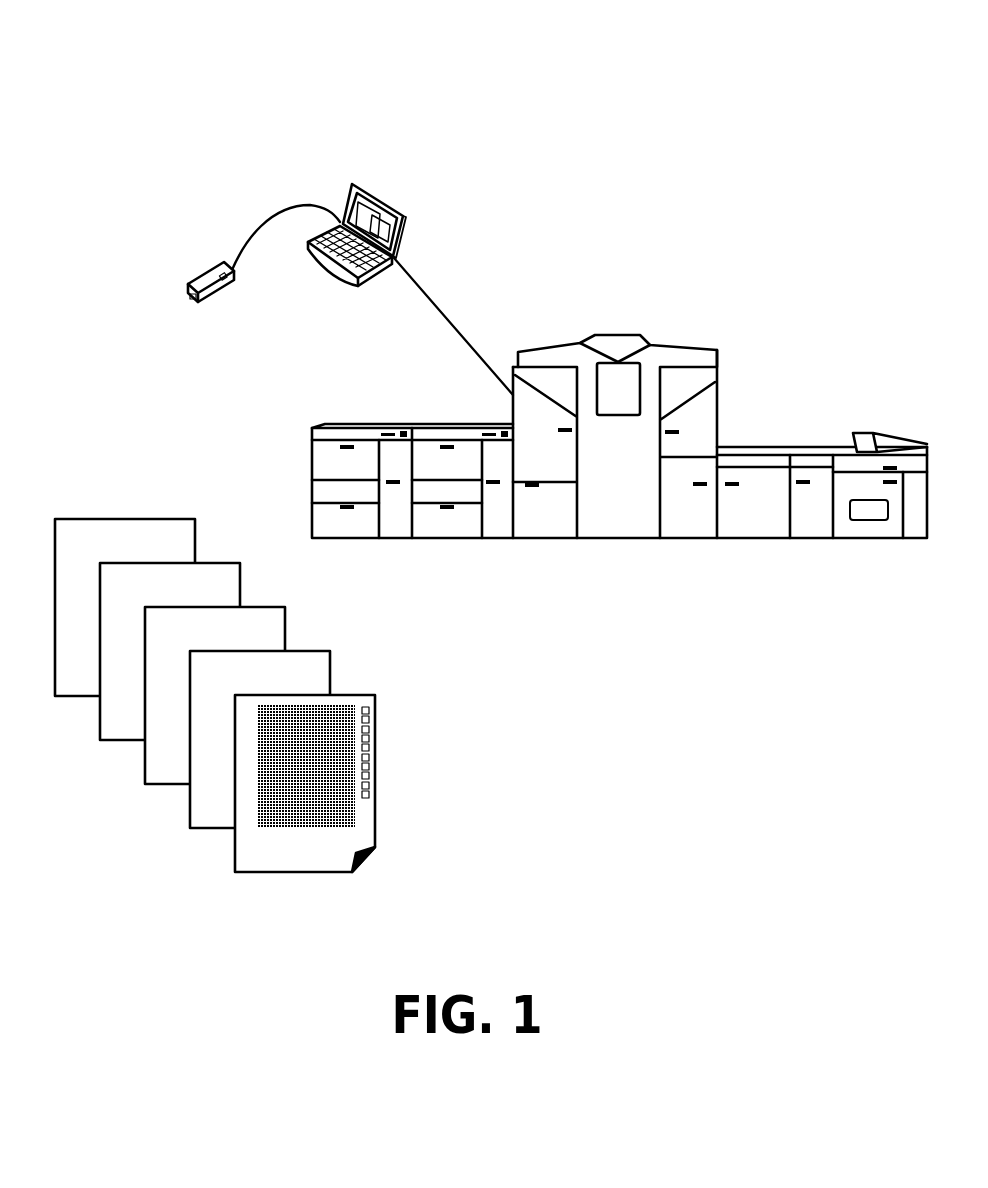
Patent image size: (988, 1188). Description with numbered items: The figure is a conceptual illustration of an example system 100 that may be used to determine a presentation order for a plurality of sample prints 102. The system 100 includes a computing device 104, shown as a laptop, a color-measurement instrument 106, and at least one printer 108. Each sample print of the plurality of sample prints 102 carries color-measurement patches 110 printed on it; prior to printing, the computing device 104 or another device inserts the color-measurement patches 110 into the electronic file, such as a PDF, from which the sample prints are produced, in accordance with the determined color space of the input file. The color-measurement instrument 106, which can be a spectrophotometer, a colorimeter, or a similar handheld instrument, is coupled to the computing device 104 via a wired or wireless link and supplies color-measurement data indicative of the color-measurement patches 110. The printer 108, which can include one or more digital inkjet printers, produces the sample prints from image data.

The system 100 is at (78, 93).
The plurality of sample prints 102 is at (61, 501).
The computing device 104 is at (405, 215).
The color-measurement instrument 106 is at (203, 275).
The printer 108 is at (867, 434).
The color-measurement patches 110 is at (363, 704).